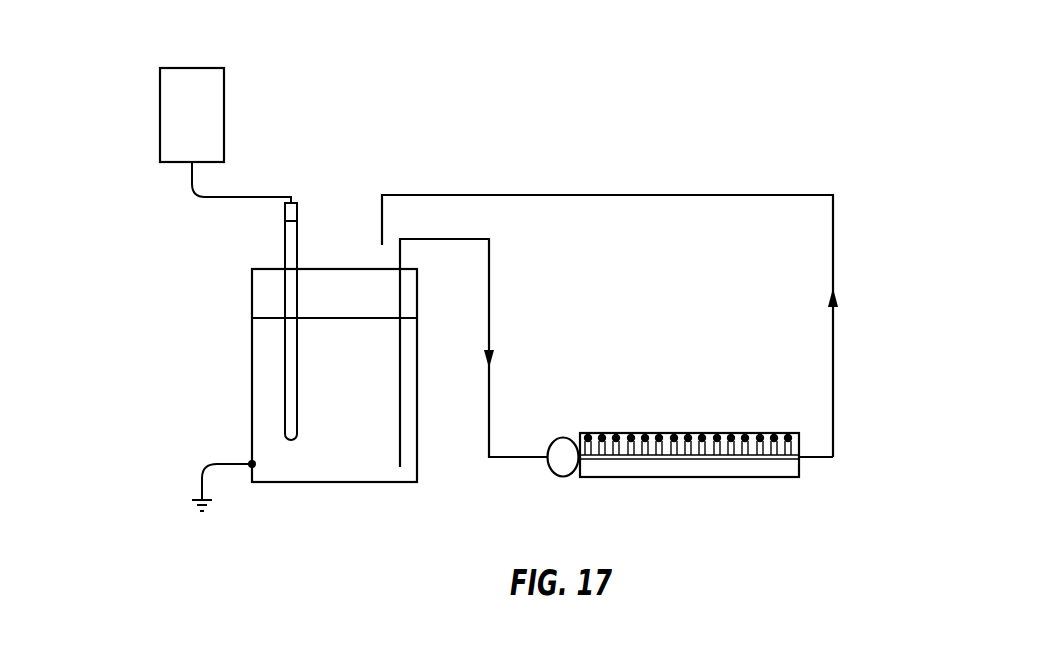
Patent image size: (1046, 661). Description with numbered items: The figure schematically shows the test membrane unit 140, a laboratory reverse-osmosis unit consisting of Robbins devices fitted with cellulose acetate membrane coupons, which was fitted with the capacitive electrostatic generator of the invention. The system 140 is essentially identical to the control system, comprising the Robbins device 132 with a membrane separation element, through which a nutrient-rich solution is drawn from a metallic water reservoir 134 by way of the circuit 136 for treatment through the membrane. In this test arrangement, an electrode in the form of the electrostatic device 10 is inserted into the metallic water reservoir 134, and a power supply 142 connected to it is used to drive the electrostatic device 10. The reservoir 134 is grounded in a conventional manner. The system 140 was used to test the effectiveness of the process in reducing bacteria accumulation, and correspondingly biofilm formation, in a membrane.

The electrostatic device 10 is at (297, 255).
The Robbins device 132 is at (757, 477).
The metallic water reservoir 134 is at (252, 385).
The circuit 136 is at (833, 232).
The test membrane unit 140 is at (714, 71).
The power supply 142 is at (160, 110).